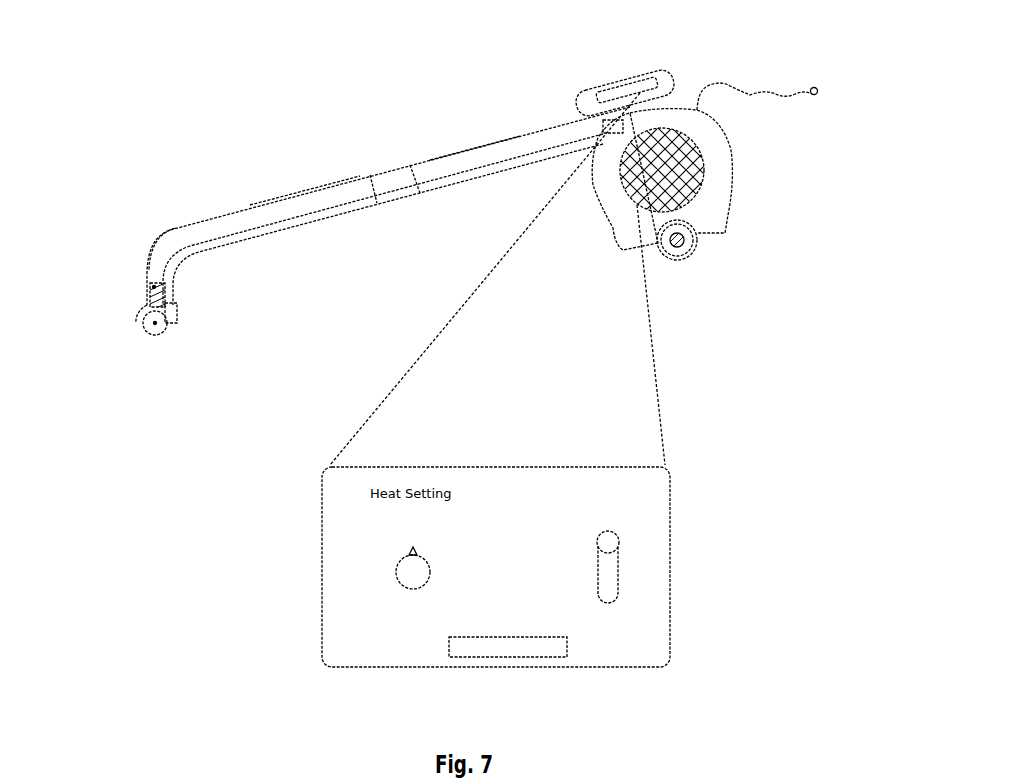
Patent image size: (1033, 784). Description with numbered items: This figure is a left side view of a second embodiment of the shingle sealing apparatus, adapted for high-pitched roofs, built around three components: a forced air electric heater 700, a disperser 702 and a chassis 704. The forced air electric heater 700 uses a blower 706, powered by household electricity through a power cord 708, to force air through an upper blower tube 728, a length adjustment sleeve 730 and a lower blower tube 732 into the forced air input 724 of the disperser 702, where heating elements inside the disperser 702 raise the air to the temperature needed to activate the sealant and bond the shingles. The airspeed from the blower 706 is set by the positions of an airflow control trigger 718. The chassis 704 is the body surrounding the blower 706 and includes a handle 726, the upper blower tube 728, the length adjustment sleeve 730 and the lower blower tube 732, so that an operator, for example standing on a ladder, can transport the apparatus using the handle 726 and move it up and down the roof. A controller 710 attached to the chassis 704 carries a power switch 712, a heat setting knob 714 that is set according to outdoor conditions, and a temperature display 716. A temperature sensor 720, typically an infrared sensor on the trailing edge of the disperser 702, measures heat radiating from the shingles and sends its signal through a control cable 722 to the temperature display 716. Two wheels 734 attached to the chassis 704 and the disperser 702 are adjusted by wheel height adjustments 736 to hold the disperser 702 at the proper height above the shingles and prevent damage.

The forced air electric heater 700 is at (368, 110).
The disperser 702 is at (142, 297).
The chassis 704 is at (710, 150).
The blower 706 is at (703, 180).
The power cord 708 is at (733, 83).
The controller 710 is at (640, 93).
The power switch 712 is at (610, 565).
The heat setting knob 714 is at (408, 572).
The temperature display 716 is at (512, 657).
The airflow control trigger 718 is at (605, 98).
The temperature sensor 720 is at (168, 312).
The control cable 722 is at (515, 157).
The forced air input 724 is at (160, 268).
The handle 726 is at (580, 97).
The upper blower tube 728 is at (465, 167).
The length adjustment sleeve 730 is at (393, 183).
The lower blower tube 732 is at (283, 213).
The wheels 734 is at (157, 326).
The wheel height adjustments 736 is at (167, 298).